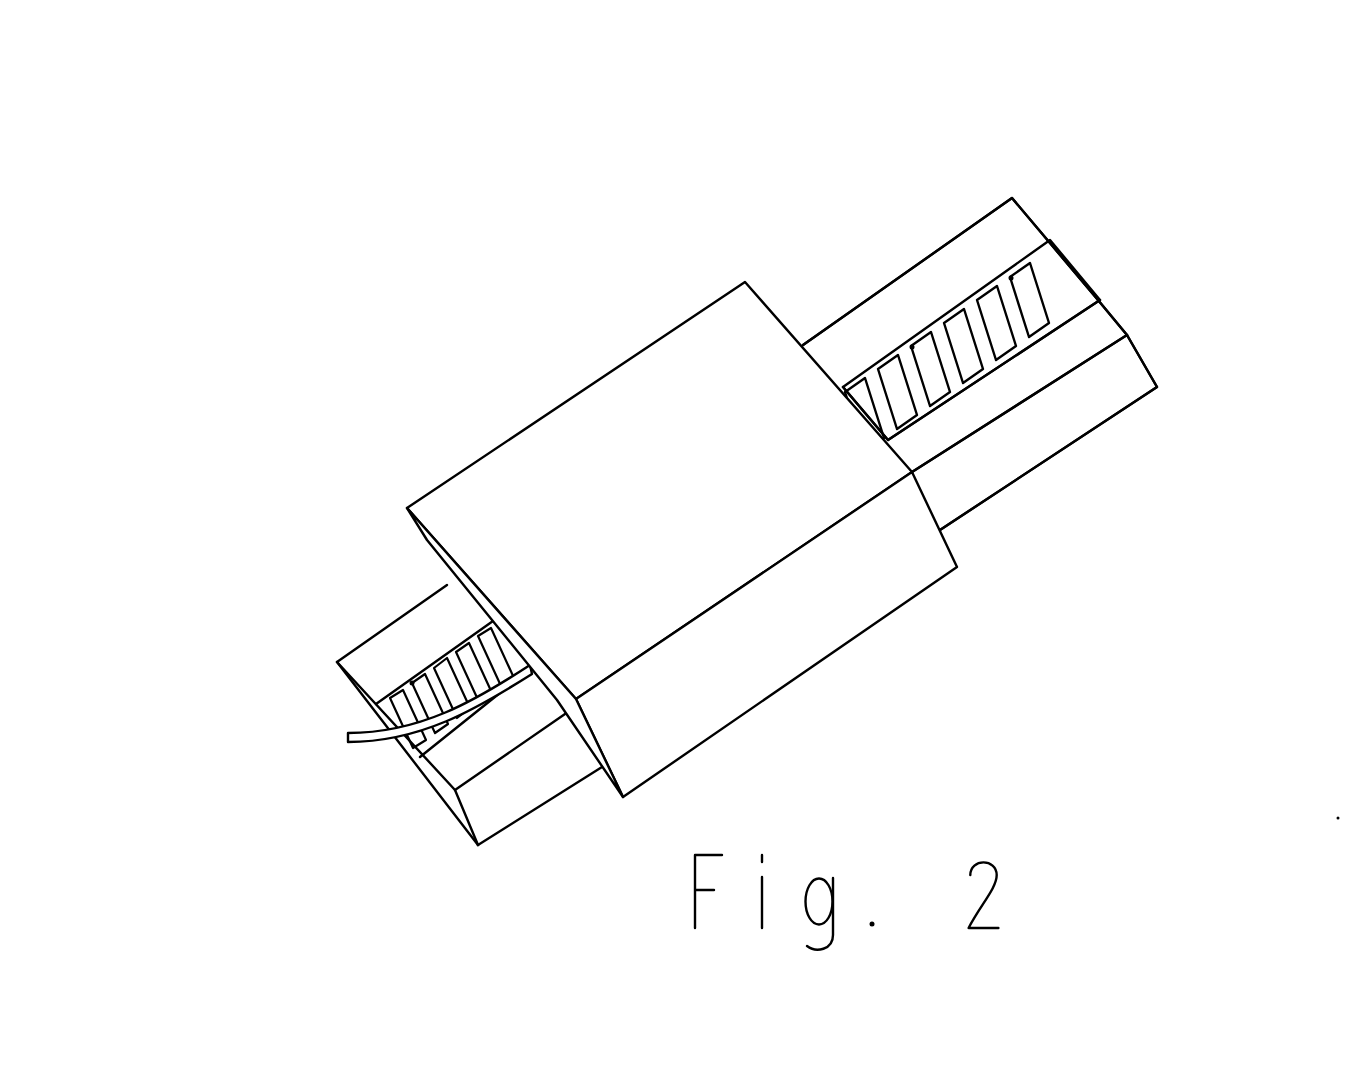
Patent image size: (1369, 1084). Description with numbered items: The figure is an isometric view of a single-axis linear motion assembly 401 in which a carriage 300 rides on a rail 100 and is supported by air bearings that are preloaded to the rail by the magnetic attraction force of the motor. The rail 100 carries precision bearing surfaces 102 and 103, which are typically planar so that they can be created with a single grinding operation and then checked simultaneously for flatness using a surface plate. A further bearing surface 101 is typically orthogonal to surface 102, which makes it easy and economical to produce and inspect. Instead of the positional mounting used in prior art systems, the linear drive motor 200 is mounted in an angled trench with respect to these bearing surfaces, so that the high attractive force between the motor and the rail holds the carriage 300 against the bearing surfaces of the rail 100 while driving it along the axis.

The rail 100 is at (1335, 433).
The bearing surface 101 is at (1043, 437).
The precision bearing surface 102 is at (973, 415).
The precision bearing surface 103 is at (875, 330).
The linear drive motor 200 is at (1232, 175).
The carriage 300 is at (419, 259).
The assembly 401 is at (168, 466).